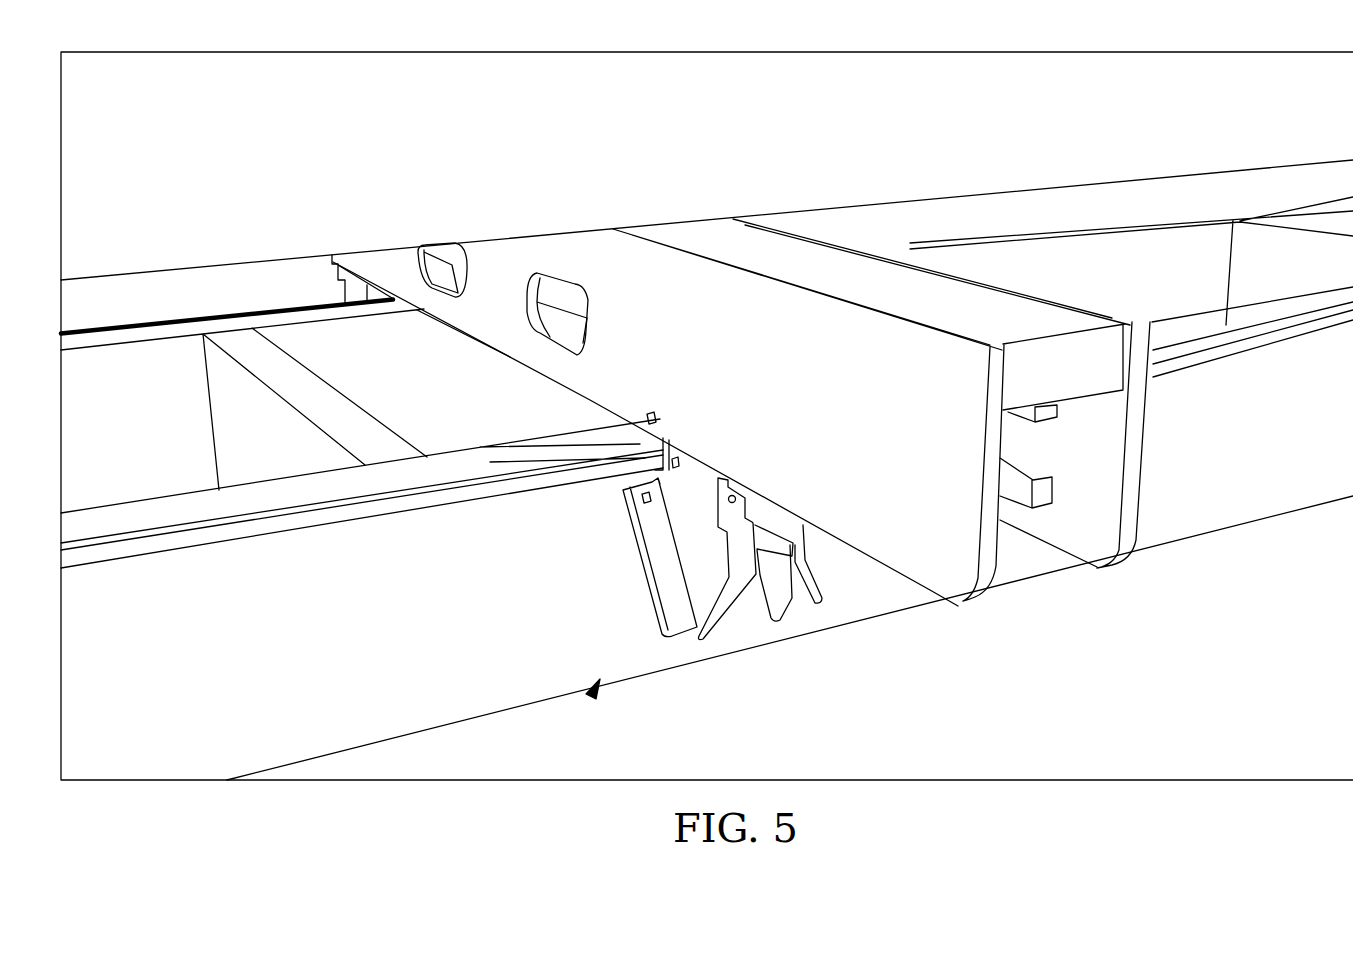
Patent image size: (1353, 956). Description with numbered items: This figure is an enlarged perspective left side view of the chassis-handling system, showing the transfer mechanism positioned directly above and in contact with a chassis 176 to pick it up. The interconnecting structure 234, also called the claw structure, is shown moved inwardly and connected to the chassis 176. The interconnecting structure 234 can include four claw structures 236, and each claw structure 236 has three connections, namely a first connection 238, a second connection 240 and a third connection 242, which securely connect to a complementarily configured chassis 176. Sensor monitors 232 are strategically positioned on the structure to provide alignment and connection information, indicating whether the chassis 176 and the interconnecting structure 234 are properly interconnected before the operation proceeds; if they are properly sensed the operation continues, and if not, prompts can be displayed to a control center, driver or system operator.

The chassis 176 is at (393, 732).
The sensor monitors 232 is at (649, 412).
The interconnecting structure 234 is at (591, 698).
The claw structure 236 is at (703, 606).
The first connection 238 is at (638, 431).
The second connection 240 is at (607, 459).
The third connection 242 is at (630, 473).